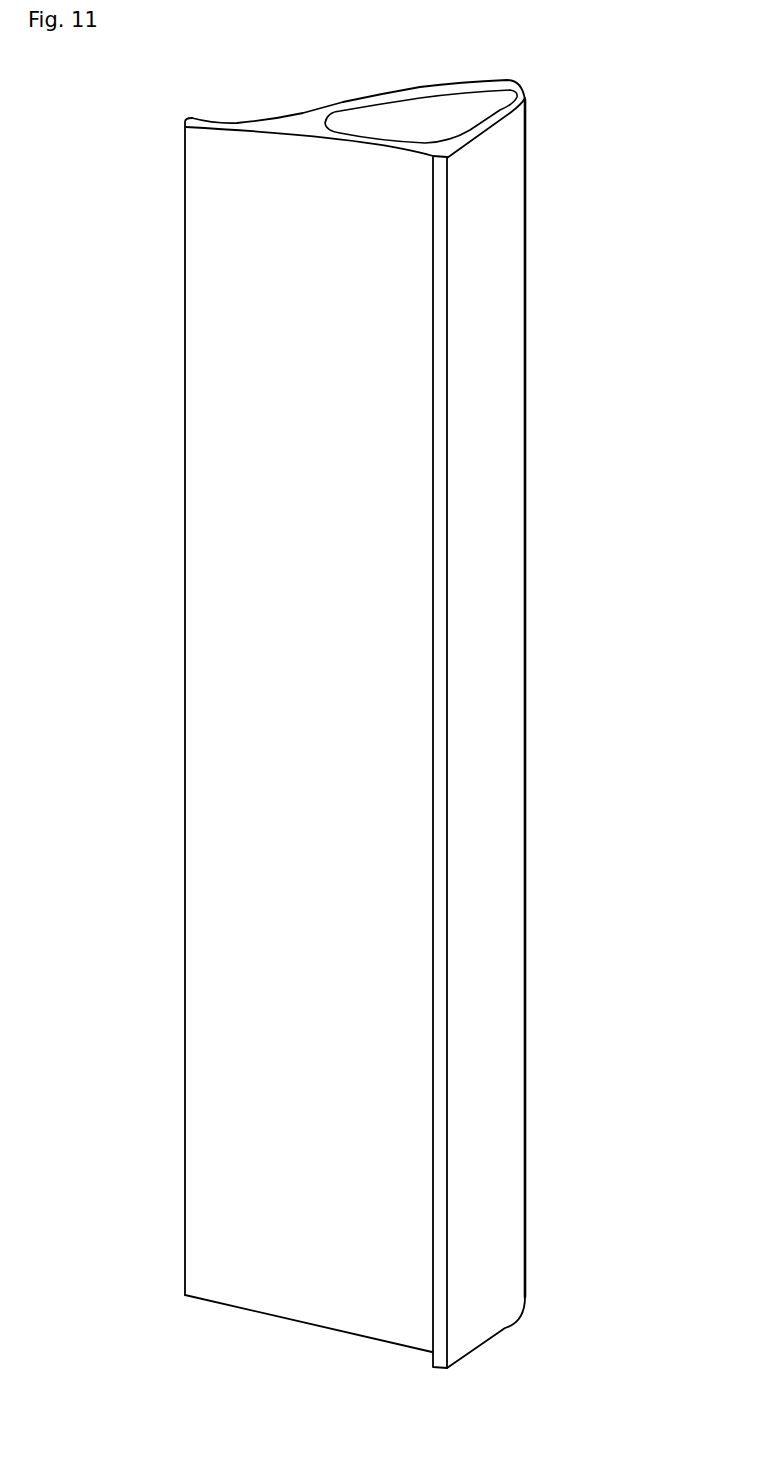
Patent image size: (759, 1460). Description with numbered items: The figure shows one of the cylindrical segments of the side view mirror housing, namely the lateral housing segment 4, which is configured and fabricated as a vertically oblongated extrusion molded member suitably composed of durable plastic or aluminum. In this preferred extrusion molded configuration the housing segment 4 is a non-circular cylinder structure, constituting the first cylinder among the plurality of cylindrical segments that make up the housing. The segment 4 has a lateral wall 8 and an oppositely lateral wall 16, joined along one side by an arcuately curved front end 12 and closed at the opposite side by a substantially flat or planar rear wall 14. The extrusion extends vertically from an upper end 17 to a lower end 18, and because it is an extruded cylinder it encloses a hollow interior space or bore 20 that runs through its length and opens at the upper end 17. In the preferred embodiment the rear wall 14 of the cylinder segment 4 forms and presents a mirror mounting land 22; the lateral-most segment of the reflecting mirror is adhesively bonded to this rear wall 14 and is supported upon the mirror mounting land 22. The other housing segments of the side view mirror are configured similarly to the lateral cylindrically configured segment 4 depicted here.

The housing segment 4 is at (160, 783).
The lateral wall 8 is at (497, 678).
The arcuately curved front end 12 is at (520, 342).
The rear wall 14 is at (322, 133).
The oppositely lateral wall 16 is at (343, 102).
The upper end 17 is at (410, 90).
The lower end 18 is at (320, 1328).
The hollow interior space or bore 20 is at (470, 117).
The mirror mounting land 22 is at (265, 470).